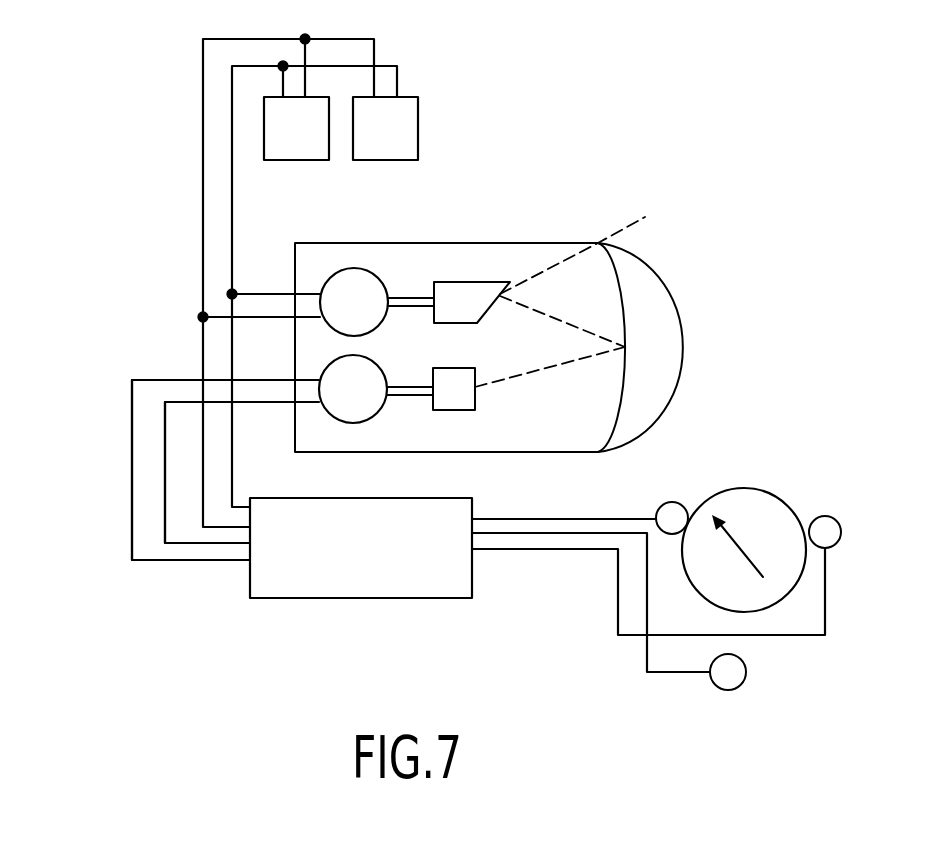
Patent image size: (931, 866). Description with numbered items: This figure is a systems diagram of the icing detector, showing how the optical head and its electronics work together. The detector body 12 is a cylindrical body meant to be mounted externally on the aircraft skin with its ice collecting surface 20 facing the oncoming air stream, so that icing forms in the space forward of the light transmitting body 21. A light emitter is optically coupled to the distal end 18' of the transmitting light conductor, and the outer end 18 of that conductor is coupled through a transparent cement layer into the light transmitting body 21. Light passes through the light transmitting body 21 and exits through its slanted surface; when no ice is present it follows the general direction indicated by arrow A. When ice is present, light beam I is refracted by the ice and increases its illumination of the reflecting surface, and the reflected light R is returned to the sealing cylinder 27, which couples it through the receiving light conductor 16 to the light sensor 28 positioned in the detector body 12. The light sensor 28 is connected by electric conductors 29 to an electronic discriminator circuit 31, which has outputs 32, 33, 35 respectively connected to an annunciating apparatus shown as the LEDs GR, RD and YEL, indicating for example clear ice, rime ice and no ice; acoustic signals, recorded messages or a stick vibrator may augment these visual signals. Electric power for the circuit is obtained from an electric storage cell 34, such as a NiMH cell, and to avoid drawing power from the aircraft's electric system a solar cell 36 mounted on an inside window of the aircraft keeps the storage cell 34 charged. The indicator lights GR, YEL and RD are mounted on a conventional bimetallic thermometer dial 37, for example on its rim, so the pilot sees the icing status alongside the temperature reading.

The detector body 12 is at (453, 243).
The receiving light conductor 16 is at (396, 385).
The outer end of the transmitting light conductor 18 is at (420, 249).
The distal end of the transmitting light conductor 18' is at (390, 245).
The ice collecting surface 20 is at (354, 298).
The light transmitting body 21 is at (480, 293).
The sealing cylinder 27 is at (452, 398).
The light sensor 28 is at (365, 400).
The electric conductors 29 is at (160, 457).
The electronic discriminator circuit 31 is at (361, 548).
The output 32 is at (510, 517).
The output 33 is at (503, 550).
The electric storage cell 34 is at (405, 118).
The output 35 is at (602, 535).
The solar cell 36 is at (285, 138).
The bimetallic thermometer dial 37 is at (752, 500).
The arrow A is at (610, 232).
The light beam I is at (552, 313).
The reflected beam R is at (560, 367).
The green LED GR is at (670, 503).
The red LED RD is at (823, 516).
The yellow LED YEL is at (755, 672).